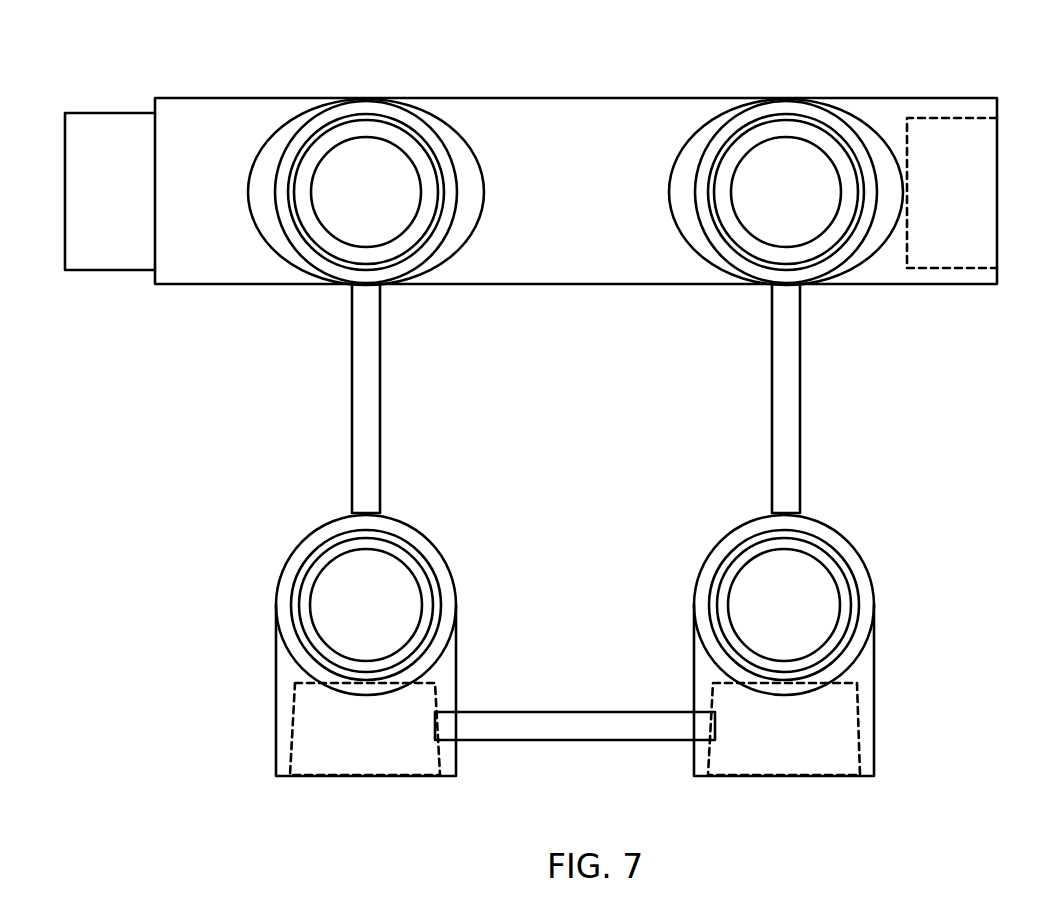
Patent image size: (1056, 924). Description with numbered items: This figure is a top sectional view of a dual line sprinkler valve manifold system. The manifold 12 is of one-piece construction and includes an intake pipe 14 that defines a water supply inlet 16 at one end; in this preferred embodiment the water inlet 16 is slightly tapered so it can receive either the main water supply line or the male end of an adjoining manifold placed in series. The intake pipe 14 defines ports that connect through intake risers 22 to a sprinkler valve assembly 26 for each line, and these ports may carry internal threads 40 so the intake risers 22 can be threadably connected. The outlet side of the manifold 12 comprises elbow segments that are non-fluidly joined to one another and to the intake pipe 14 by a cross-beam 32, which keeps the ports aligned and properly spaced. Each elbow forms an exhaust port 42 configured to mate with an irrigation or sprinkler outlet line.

The manifold 12 is at (847, 428).
The intake pipe 14 is at (958, 142).
The water supply inlet 16 is at (800, 147).
The intake riser 22 is at (847, 633).
The sprinkler valve assembly 26 is at (786, 347).
The cross-beam 32 is at (605, 722).
The internal threads 40 is at (97, 125).
The exhaust port 42 is at (788, 767).